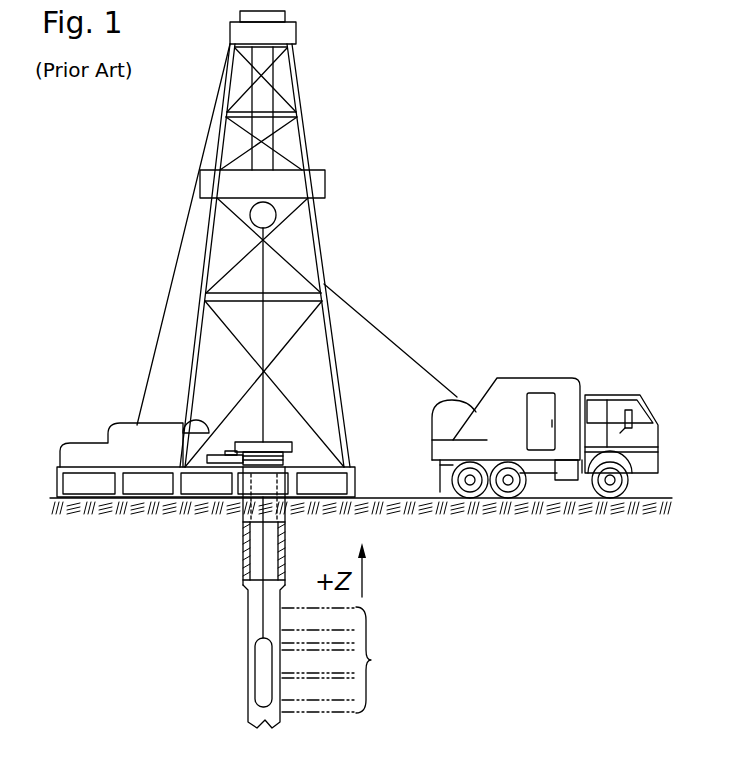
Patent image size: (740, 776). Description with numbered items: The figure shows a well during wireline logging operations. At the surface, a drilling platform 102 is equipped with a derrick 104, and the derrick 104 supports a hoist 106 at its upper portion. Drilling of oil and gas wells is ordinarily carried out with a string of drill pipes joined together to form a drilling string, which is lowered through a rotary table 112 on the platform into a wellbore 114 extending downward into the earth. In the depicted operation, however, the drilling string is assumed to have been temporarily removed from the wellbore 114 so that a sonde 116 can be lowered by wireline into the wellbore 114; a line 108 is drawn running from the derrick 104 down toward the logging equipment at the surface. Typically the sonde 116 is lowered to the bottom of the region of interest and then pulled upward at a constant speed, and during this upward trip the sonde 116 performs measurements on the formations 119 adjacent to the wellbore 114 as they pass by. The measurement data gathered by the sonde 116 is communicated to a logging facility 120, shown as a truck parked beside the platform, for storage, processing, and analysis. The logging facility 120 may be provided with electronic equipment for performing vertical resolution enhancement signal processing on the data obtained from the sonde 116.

The drilling platform 102 is at (355, 473).
The derrick 104 is at (345, 417).
The hoist 106 is at (273, 218).
The cable line to logging truck 108 is at (368, 318).
The rotary table 112 is at (277, 442).
The wellbore 114 is at (247, 602).
The sonde 116 is at (258, 670).
The formations 119 is at (349, 660).
The logging facility 120 is at (515, 377).